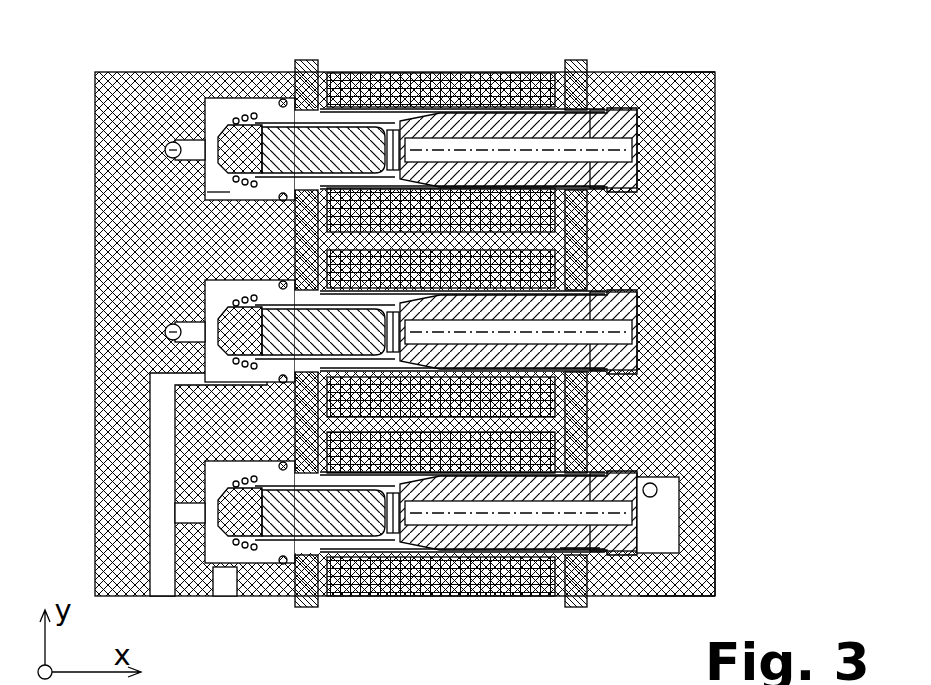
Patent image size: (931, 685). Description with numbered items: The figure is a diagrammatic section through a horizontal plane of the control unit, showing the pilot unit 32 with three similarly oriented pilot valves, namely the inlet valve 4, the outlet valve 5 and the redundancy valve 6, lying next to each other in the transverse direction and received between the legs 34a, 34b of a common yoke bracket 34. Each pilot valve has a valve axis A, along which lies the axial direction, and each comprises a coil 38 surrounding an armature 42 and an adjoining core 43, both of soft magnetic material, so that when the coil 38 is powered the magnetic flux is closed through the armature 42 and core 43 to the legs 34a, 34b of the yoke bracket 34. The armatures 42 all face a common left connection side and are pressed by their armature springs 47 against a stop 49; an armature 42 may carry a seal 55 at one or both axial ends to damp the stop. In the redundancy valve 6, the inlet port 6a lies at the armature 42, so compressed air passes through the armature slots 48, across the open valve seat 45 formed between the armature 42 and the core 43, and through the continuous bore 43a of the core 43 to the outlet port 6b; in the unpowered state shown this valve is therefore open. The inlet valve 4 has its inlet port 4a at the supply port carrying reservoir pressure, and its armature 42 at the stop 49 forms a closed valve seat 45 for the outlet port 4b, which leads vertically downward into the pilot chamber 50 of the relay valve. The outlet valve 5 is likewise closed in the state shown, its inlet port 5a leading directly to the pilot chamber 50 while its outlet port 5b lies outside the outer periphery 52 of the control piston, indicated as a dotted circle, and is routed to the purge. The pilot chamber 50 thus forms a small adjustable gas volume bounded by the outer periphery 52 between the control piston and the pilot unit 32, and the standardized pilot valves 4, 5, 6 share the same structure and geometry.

The pilot unit 32 is at (140, 72).
The yoke bracket 34 is at (717, 163).
The leg of the yoke bracket 34a is at (300, 62).
The leg of the yoke bracket 34b is at (572, 62).
The coil 38 is at (508, 82).
The armature 42 is at (345, 112).
The core 43 is at (717, 127).
The continuous bore 43a is at (575, 565).
The valve seat 45 is at (95, 176).
The armature spring 47 is at (215, 98).
The armature slots 48 is at (265, 555).
The stop 49 is at (165, 146).
The pilot chamber 50 is at (480, 560).
The outer periphery of the control piston 52 is at (715, 378).
The seal 55 is at (382, 545).
The inlet valve 4 is at (715, 330).
The inlet port of the inlet valve 4a is at (162, 578).
The outlet port of the inlet valve 4b is at (95, 288).
The outlet valve 5 is at (717, 87).
The inlet port of the outlet valve 5a is at (235, 195).
The outlet port of the outlet valve 5b is at (95, 137).
The redundancy valve 6 is at (700, 537).
The inlet port of the redundancy valve 6a is at (222, 582).
The outlet port of the redundancy valve 6b is at (715, 483).
The valve axis A is at (717, 141).